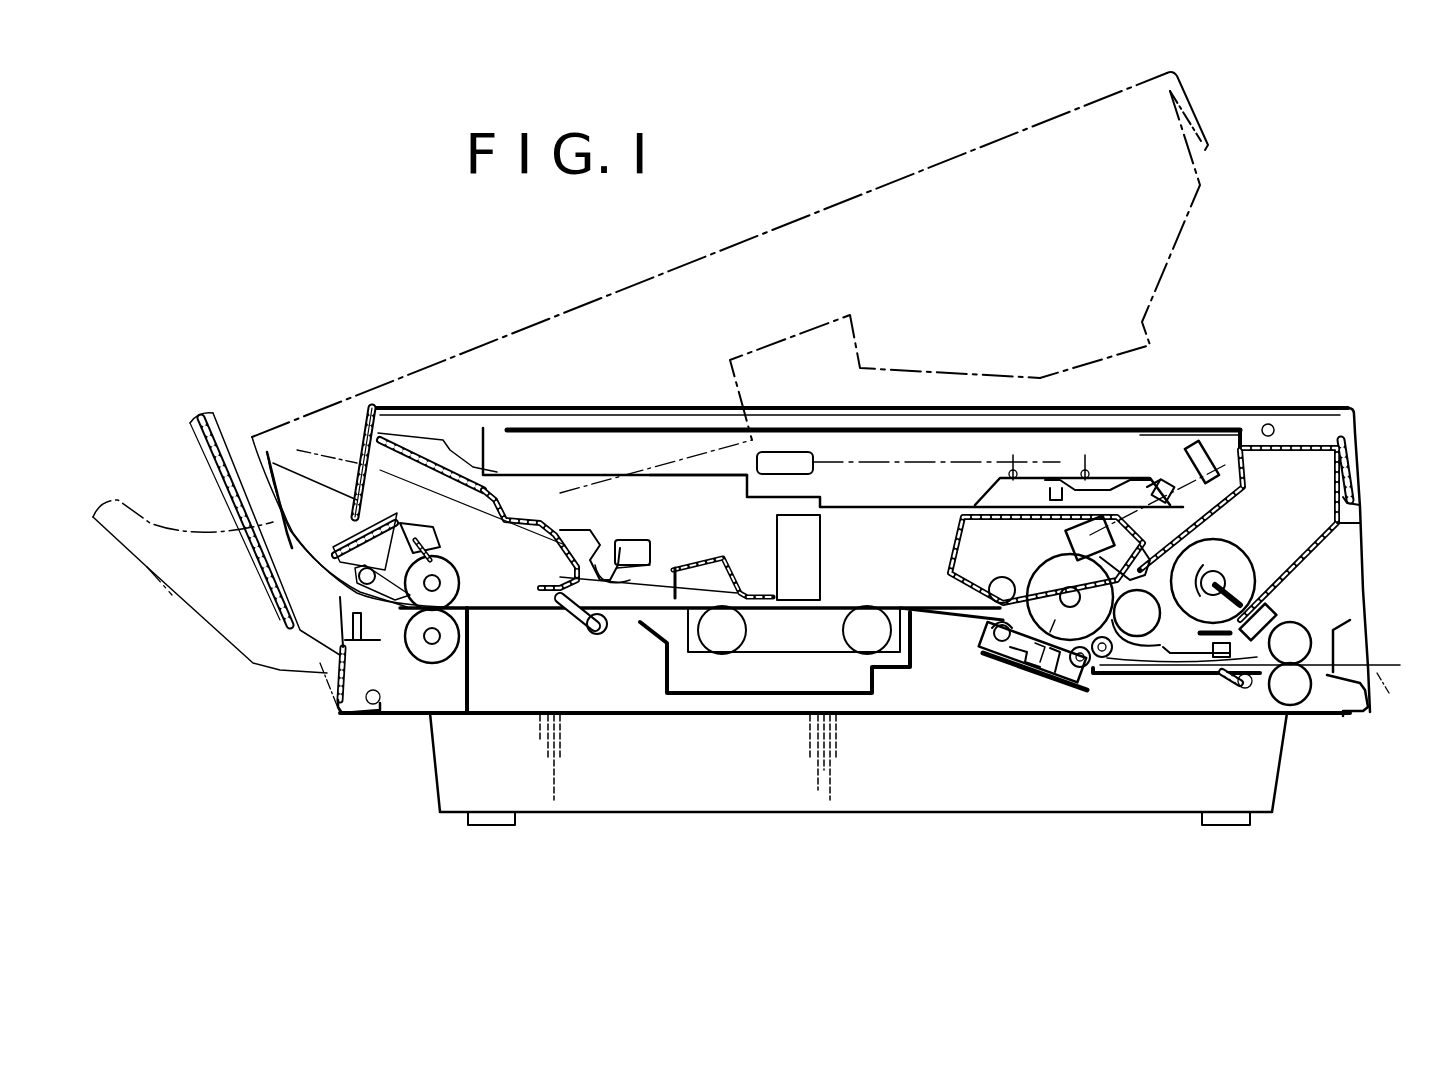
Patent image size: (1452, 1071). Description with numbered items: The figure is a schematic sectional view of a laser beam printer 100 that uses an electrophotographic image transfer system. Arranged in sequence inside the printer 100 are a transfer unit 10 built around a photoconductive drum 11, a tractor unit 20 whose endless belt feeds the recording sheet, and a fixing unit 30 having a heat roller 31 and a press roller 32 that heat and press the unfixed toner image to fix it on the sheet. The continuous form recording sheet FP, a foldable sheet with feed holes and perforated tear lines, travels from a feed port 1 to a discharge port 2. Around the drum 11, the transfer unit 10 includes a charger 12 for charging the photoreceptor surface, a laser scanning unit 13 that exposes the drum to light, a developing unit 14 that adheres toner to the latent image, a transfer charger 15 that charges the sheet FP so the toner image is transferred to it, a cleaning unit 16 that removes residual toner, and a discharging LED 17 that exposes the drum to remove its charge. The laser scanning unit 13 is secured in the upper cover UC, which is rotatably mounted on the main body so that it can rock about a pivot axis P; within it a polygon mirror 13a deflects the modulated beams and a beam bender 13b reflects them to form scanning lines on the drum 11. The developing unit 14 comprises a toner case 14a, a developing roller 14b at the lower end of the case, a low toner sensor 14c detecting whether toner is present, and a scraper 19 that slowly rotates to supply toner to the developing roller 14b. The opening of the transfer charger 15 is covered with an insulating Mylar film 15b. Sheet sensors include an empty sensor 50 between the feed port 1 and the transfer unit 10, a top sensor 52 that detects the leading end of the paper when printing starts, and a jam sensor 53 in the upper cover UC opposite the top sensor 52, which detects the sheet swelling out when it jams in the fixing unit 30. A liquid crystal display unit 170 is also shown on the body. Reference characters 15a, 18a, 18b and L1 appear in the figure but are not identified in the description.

The feed port 1 is at (1348, 643).
The discharge port 2 is at (320, 547).
The upper cover UC is at (537, 312).
The pivot axis P is at (324, 578).
The transfer unit 10 is at (1115, 462).
The photoconductive drum 11 is at (1040, 573).
The charger 12 is at (1072, 540).
The laser scanning unit 13 is at (890, 455).
The polygon mirror 13a is at (785, 445).
The beam bender 13b is at (1194, 410).
The developing unit 14 is at (1303, 560).
The toner case 14a is at (1360, 526).
The developing roller 14b is at (1128, 676).
The low toner sensor 14c is at (1270, 612).
The transfer charger 15 is at (1030, 690).
The developing roller 15a is at (1058, 692).
The Mylar film 15b is at (1027, 670).
The cleaning unit 16 is at (955, 560).
The discharging LED 17 is at (1057, 455).
The transfer roller 18a is at (1112, 690).
The guide roller 18b is at (1075, 695).
The scraper 19 is at (1232, 583).
The tractor unit 20 is at (740, 700).
The fixing unit 30 is at (407, 662).
The heat roller 31 is at (458, 582).
The press roller 32 is at (438, 670).
The empty sensor 50 is at (1230, 690).
The top sensor 52 is at (583, 628).
The jam sensor 53 is at (602, 548).
The printer 100 is at (1033, 368).
The liquid crystal display unit 170 is at (1352, 457).
The continuous form recording sheet FP is at (1262, 689).
The line L1 is at (993, 632).